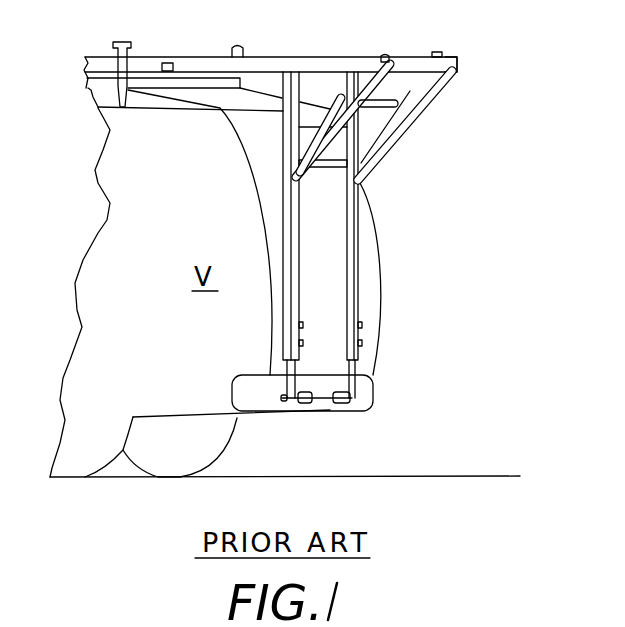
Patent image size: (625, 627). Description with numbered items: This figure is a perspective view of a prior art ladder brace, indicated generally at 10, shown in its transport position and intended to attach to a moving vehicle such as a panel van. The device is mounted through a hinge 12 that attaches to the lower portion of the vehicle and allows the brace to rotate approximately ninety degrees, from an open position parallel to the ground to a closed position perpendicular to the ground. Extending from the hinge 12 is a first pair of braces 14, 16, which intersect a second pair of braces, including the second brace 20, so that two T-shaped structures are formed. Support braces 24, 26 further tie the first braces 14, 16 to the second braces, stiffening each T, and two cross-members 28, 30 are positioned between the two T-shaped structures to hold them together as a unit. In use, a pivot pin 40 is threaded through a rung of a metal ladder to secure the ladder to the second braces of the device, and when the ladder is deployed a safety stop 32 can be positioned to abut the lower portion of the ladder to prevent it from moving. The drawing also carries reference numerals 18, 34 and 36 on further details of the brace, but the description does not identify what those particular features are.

The gangway / brow apparatus (prior art) 10 is at (417, 207).
The hinge 12 is at (322, 401).
The first brace 14 is at (283, 313).
The first brace 16 is at (353, 287).
The guide brackets 18 is at (299, 346).
The second brace 20 is at (283, 57).
The support brace 24 is at (317, 142).
The support brace 26 is at (420, 102).
The cross-member 28 is at (327, 167).
The cross-member 30 is at (452, 63).
The safety stop 32 is at (385, 79).
The post inner sleeve 34 is at (298, 158).
The horizontal support arm 36 is at (377, 154).
The pivot pin 40 is at (172, 60).